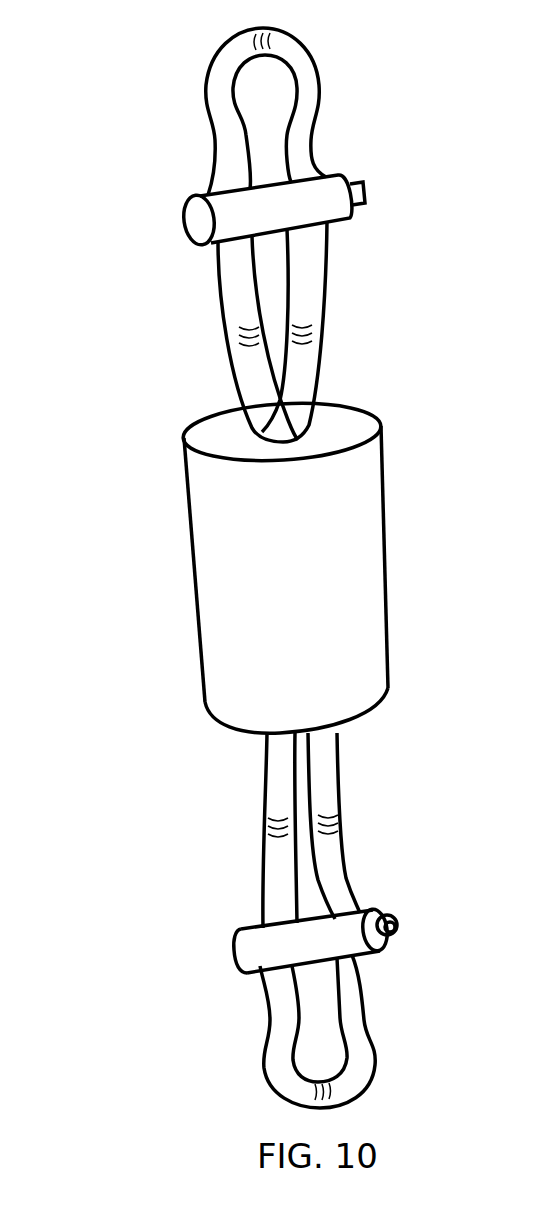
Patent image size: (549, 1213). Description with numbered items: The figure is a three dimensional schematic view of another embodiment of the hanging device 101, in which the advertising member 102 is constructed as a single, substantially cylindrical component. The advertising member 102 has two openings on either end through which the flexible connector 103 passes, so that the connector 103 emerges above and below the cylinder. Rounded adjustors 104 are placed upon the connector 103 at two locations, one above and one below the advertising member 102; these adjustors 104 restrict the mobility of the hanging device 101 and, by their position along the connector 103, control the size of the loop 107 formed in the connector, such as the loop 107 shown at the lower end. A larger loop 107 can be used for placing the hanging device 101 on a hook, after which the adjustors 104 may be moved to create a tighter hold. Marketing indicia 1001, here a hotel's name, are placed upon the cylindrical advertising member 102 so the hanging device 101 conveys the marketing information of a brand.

The hanging device 101 is at (116, 383).
The advertising member 102 is at (228, 728).
The connector 103 is at (237, 390).
The adjustors 104 is at (183, 228).
The loop 107 is at (317, 1050).
The marketing indicia 1001 is at (338, 630).